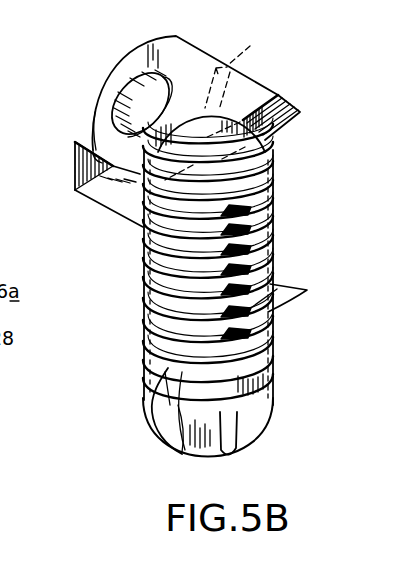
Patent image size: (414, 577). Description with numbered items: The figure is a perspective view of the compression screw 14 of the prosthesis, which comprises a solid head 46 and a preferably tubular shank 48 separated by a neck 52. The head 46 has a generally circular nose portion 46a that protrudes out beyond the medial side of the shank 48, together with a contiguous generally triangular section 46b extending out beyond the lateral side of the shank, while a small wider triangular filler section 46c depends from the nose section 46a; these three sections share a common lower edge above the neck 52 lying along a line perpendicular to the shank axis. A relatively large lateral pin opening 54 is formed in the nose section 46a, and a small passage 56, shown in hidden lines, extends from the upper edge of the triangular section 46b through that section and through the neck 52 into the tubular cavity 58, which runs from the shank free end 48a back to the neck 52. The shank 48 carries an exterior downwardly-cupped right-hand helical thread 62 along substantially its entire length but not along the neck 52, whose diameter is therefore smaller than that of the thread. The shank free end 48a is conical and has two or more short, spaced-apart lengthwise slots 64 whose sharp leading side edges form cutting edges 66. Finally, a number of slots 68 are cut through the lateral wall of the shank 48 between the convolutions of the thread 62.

The compression screw 14 is at (96, 259).
The solid head 46 is at (202, 50).
The nose portion 46a is at (94, 120).
The triangular section 46b is at (337, 88).
The triangular filler section 46c is at (74, 161).
The shank 48 is at (147, 323).
The shank free end 48a is at (262, 422).
The neck 52 is at (273, 144).
The lateral pin opening 54 is at (118, 92).
The passage 56 is at (219, 102).
The tubular cavity 58 is at (180, 453).
The helical thread 62 is at (276, 218).
The lengthwise slots 64 is at (165, 365).
The cutting edges 66 is at (155, 413).
The slots 68 is at (307, 290).